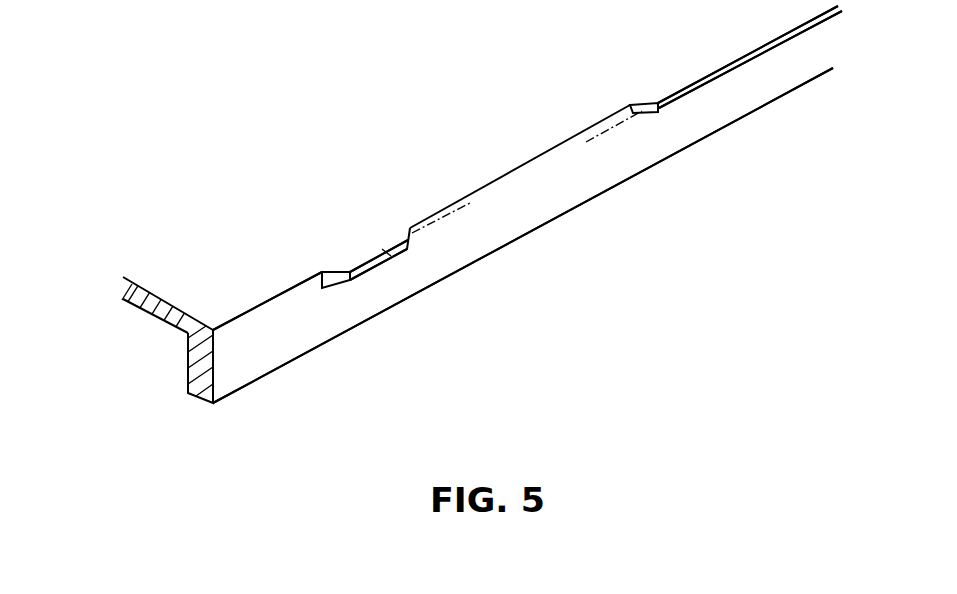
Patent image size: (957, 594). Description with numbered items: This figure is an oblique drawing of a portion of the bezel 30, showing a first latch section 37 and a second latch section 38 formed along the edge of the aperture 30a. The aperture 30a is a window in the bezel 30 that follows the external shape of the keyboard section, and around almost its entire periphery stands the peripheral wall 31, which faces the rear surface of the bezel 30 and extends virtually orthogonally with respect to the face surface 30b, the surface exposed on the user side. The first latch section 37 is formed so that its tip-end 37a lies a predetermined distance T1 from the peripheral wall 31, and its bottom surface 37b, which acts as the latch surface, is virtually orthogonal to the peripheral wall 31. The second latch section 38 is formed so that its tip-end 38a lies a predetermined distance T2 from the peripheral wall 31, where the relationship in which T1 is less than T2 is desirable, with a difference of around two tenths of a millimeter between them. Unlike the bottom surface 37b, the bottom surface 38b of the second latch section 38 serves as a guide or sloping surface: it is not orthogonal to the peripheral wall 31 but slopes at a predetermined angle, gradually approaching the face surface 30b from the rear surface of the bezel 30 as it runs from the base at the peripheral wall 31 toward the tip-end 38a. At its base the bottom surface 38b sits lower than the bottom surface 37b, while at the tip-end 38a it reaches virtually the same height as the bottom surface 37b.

The bezel 30 is at (165, 290).
The aperture 30a is at (253, 338).
The face surface 30b is at (196, 305).
The peripheral wall 31 is at (263, 365).
The first latch section 37 is at (698, 88).
The tip-end of first latch section 37a is at (805, 30).
The bottom surface of first latch section 37b is at (654, 113).
The second latch section 38 is at (420, 292).
The tip-end of second latch section 38a is at (365, 274).
The bottom surface of second latch section 38b is at (333, 288).
The distance T1 is at (628, 153).
The distance T2 is at (492, 228).